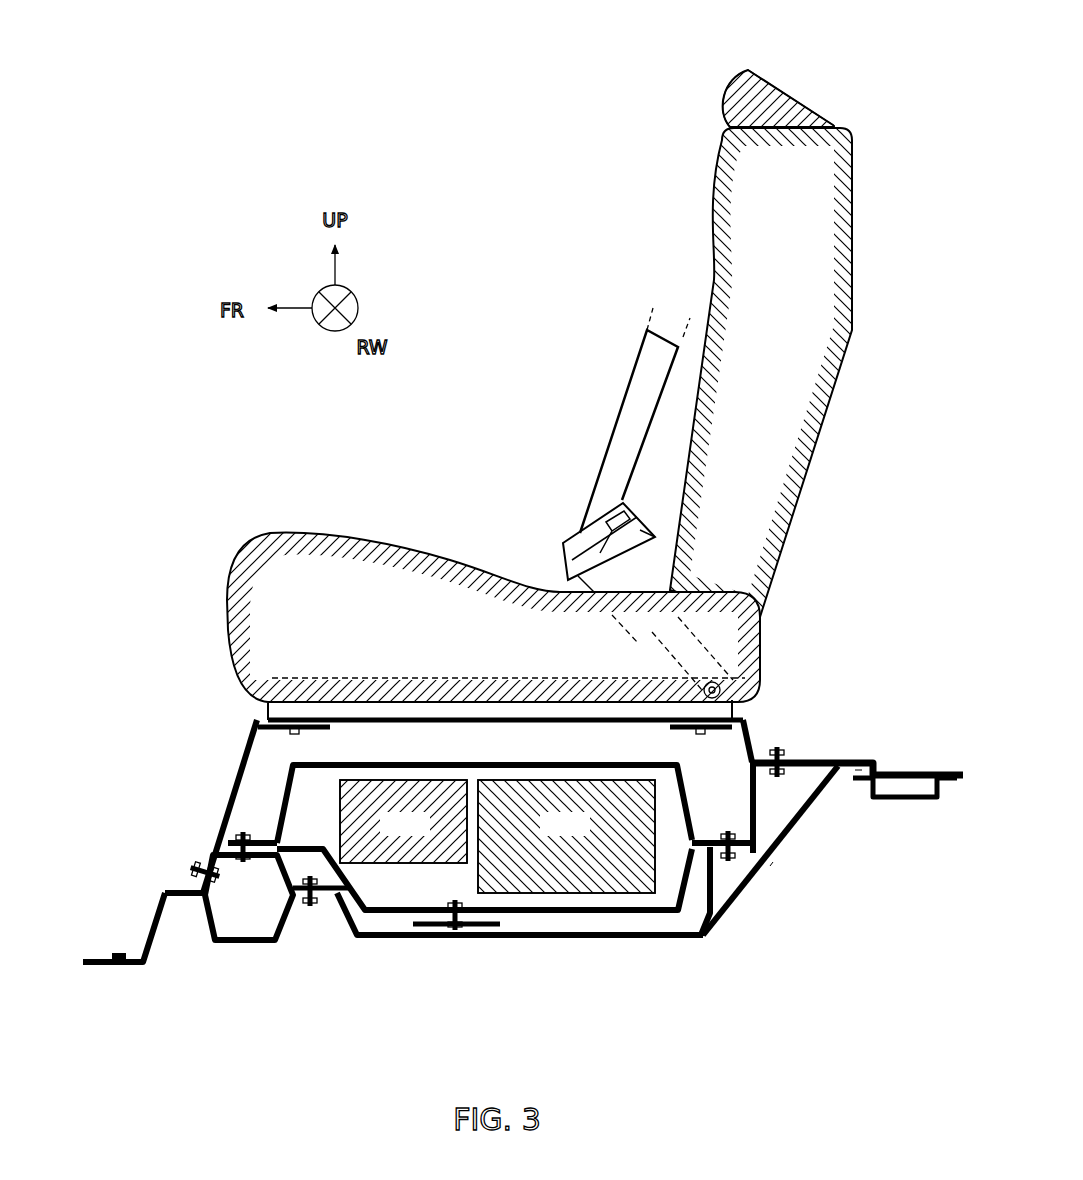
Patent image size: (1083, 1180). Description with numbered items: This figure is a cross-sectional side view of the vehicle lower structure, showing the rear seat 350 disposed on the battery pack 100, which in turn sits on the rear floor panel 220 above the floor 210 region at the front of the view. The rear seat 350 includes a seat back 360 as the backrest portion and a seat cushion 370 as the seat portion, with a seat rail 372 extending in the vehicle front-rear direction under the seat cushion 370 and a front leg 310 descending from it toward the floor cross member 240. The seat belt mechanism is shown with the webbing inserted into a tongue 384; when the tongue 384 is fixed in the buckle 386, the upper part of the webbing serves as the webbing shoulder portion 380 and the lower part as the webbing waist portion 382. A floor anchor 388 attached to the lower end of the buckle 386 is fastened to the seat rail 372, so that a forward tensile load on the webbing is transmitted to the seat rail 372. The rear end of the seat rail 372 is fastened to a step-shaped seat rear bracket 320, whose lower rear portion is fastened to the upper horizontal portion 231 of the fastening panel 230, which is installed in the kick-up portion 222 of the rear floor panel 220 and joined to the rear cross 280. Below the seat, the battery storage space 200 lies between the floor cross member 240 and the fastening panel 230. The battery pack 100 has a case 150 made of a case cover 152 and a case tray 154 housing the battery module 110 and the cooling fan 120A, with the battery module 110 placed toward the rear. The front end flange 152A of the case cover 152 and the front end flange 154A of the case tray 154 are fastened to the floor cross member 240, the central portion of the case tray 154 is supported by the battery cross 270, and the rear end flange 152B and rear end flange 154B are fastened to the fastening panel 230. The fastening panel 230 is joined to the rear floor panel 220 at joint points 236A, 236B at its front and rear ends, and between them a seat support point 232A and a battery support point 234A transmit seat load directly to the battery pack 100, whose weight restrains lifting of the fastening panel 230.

The battery pack 100 is at (467, 872).
The battery module 110 is at (568, 895).
The cooling fan 120A is at (377, 853).
The case 150 is at (467, 873).
The case cover 152 is at (434, 796).
The front end flange 152A is at (233, 833).
The rear end flange 152B is at (704, 840).
The case tray 154 is at (548, 875).
The front end flange 154A is at (300, 840).
The rear end flange 154B is at (718, 887).
The battery storage space 200 is at (564, 861).
The floor panel 210 is at (92, 967).
The rear floor panel 220 is at (383, 938).
The kick-up portion 222 is at (803, 820).
The fastening panel 230 is at (814, 820).
The upper horizontal portion 231 is at (818, 758).
The seat support point 232A is at (766, 760).
The battery support point 234A is at (768, 866).
The joint point 236A is at (710, 922).
The joint point 236B is at (857, 775).
The floor cross member 240 is at (267, 950).
The battery cross 270 is at (440, 930).
The rear cross 280 is at (903, 798).
The front frame leg 310 is at (232, 773).
The seat rear bracket 320 is at (752, 738).
The rear seat 350 is at (800, 100).
The seat back 360 is at (838, 255).
The seat cushion 370 is at (300, 570).
The seat rail 372 is at (257, 715).
The webbing shoulder portion 380 is at (627, 402).
The webbing waist portion 382 is at (563, 565).
The tongue 384 is at (578, 538).
The buckle 386 is at (650, 550).
The floor anchor 388 is at (735, 640).